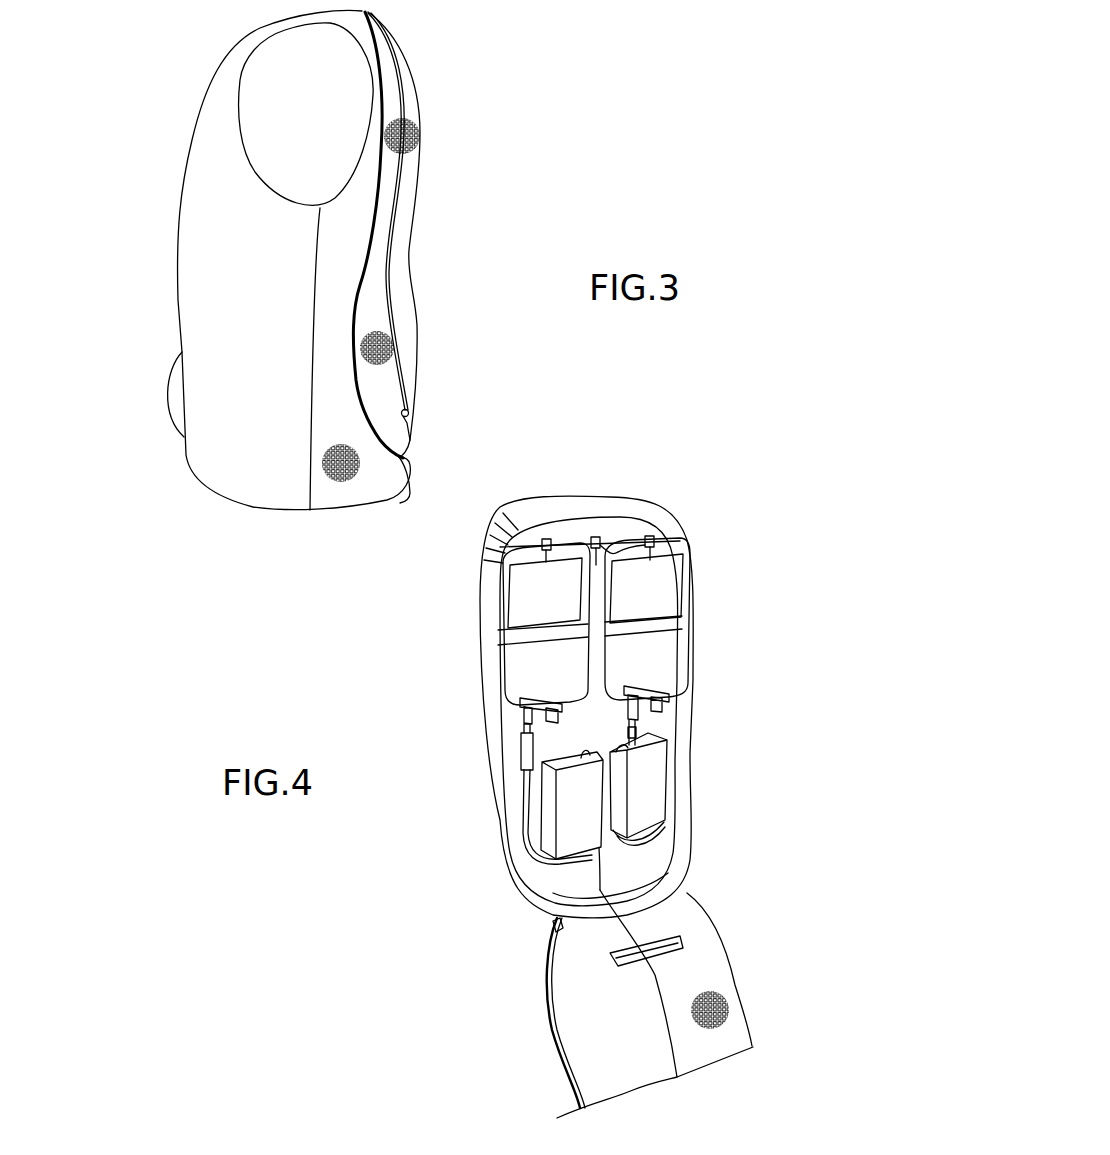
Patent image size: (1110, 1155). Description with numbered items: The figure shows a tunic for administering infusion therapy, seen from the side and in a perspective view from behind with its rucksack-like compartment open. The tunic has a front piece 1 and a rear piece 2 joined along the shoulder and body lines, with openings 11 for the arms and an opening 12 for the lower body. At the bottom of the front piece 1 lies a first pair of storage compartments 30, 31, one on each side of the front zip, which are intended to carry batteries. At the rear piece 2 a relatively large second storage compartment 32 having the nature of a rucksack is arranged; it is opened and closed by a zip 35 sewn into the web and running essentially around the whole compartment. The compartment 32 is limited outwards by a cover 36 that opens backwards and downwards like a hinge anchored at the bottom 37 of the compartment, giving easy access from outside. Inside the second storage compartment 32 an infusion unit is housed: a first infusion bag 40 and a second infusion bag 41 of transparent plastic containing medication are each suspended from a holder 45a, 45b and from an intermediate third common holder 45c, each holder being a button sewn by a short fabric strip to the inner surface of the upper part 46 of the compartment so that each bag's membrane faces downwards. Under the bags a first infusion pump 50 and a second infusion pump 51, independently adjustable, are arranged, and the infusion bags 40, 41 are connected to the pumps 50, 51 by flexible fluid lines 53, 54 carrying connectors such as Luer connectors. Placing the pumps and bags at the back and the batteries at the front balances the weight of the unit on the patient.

In FIG. 3, the front piece 1 is at (176, 224).
In FIG. 3, the rear piece 2 is at (382, 58).
In FIG. 3, the openings for the arms 11 is at (277, 82).
In FIG. 3, the opening for the lower body 12 is at (273, 508).
In FIG. 3, the first storage compartment 30 is at (114, 394).
In FIG. 3, the first storage compartment 31 is at (146, 375).
In FIG. 3, the second storage compartment 32 is at (427, 261).
In FIG. 4, the second storage compartment 32 is at (697, 753).
In FIG. 3, the zip 35 is at (413, 413).
In FIG. 4, the zip 35 is at (552, 930).
In FIG. 3, the cover 36 is at (407, 239).
In FIG. 4, the cover 36 is at (600, 1045).
In FIG. 4, the bottom 37 is at (668, 881).
In FIG. 4, the first infusion bag 40 is at (543, 597).
In FIG. 4, the second infusion bag 41 is at (653, 595).
In FIG. 4, the holder 45a is at (548, 535).
In FIG. 4, the holder 45b is at (652, 533).
In FIG. 4, the third common holder 45c is at (598, 535).
In FIG. 4, the upper part 46 is at (624, 540).
In FIG. 4, the first infusion pump 50 is at (572, 803).
In FIG. 4, the second infusion pump 51 is at (643, 783).
In FIG. 4, the flexible fluid line 53 is at (521, 778).
In FIG. 4, the flexible fluid line 54 is at (662, 838).